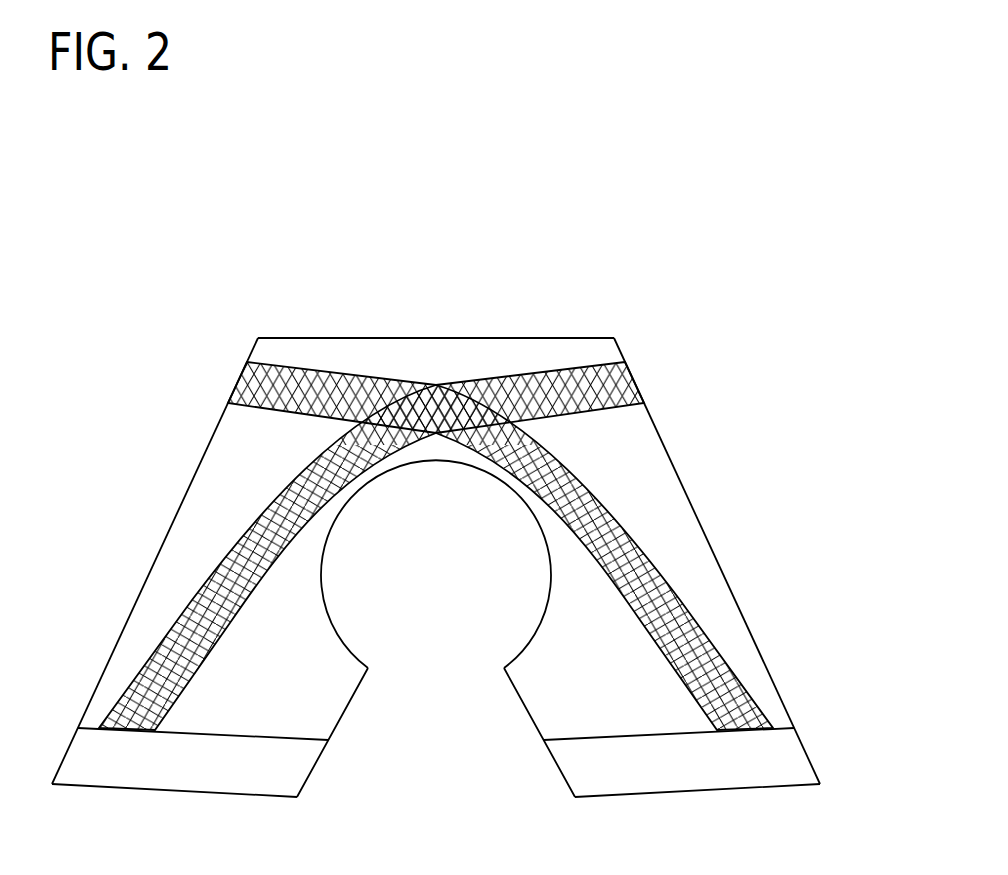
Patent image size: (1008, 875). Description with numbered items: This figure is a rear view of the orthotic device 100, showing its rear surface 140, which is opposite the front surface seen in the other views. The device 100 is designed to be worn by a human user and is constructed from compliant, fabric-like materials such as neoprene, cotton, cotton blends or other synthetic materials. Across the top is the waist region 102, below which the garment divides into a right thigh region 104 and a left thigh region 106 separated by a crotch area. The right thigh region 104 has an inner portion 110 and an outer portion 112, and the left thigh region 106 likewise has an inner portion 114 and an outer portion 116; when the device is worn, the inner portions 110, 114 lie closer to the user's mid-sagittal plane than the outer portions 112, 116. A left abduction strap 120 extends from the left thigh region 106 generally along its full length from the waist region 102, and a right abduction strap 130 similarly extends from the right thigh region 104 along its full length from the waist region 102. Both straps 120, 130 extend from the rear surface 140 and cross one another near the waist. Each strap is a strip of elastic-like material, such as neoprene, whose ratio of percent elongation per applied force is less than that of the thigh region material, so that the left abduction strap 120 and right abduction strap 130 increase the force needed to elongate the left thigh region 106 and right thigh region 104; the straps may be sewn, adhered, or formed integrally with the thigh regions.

The orthotic device 100 is at (632, 301).
The waist region 102 is at (462, 360).
The right thigh region 104 is at (677, 448).
The left thigh region 106 is at (175, 457).
The inner portion 110 is at (558, 607).
The outer portion 112 is at (673, 523).
The inner portion 114 is at (313, 623).
The outer portion 116 is at (170, 550).
The left abduction strap 120 is at (143, 662).
The right abduction strap 130 is at (700, 632).
The rear surface 140 is at (373, 332).